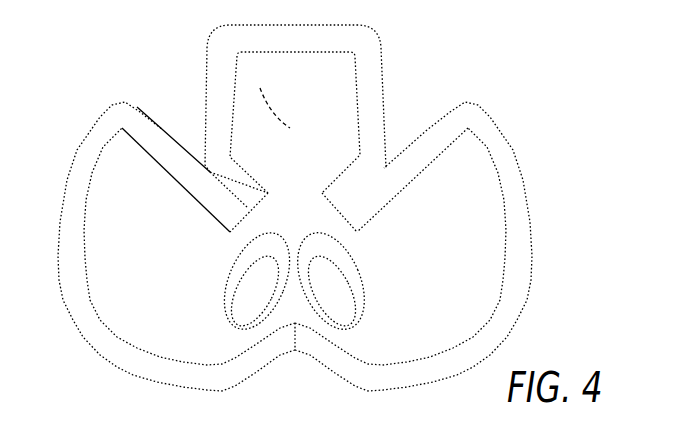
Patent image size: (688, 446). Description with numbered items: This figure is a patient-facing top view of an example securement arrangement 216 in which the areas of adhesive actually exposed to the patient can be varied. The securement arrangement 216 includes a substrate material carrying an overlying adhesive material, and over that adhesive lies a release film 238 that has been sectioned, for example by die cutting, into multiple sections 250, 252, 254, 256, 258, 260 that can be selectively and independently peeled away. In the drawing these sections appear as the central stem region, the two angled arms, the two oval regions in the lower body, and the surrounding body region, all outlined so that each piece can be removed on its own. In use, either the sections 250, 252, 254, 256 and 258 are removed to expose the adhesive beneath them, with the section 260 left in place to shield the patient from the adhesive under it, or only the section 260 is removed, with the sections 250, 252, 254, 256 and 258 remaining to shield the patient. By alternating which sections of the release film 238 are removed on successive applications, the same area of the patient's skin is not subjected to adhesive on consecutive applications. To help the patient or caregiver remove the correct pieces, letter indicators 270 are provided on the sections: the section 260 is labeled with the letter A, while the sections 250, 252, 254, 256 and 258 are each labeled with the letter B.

The securement arrangement 216 is at (556, 90).
The release film 238 is at (523, 155).
The section 250 is at (366, 88).
The section 252 is at (70, 172).
The section 254 is at (522, 222).
The section 256 is at (227, 311).
The section 258 is at (361, 303).
The section 260 is at (117, 288).
The indicator 270 is at (357, 115).